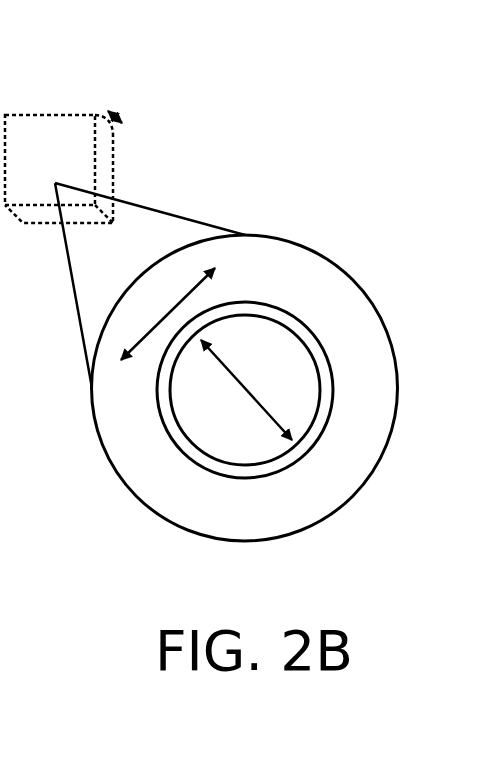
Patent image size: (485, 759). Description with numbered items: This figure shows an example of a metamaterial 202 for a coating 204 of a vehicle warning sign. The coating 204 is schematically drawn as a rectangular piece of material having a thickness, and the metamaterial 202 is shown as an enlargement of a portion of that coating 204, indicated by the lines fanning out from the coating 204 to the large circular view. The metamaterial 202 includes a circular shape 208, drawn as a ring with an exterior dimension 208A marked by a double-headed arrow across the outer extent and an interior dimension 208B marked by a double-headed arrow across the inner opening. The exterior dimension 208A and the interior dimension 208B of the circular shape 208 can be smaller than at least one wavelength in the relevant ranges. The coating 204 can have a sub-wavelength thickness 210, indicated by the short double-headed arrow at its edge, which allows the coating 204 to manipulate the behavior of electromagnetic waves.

The metamaterial 202 is at (293, 281).
The coating 204 is at (37, 115).
The circular shape 208 is at (157, 403).
The exterior dimension 208A is at (158, 318).
The interior dimension 208B is at (242, 387).
The sub-wavelength thickness 210 is at (117, 114).